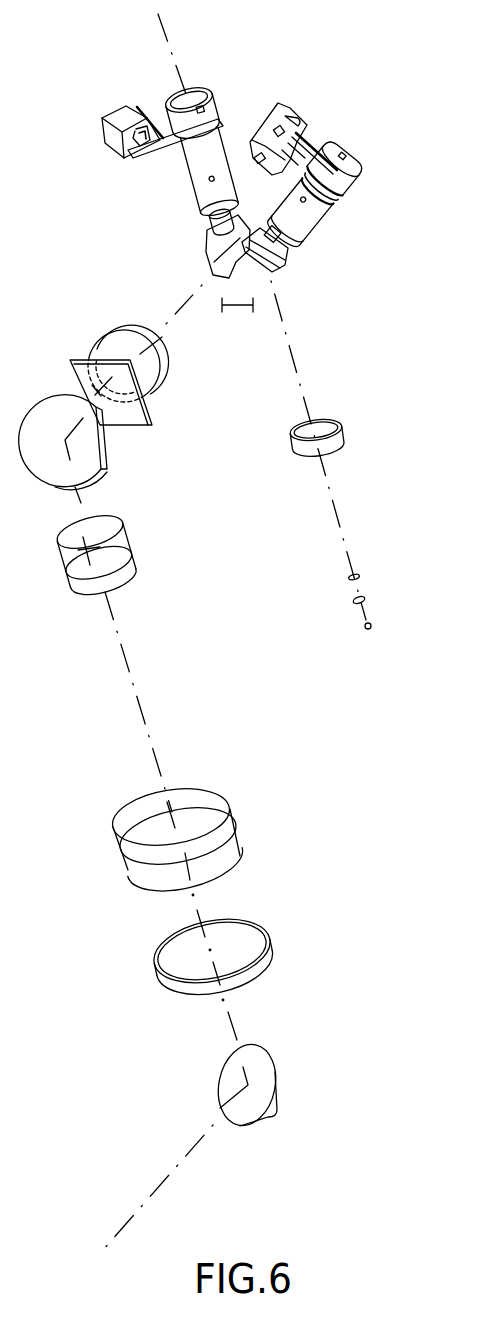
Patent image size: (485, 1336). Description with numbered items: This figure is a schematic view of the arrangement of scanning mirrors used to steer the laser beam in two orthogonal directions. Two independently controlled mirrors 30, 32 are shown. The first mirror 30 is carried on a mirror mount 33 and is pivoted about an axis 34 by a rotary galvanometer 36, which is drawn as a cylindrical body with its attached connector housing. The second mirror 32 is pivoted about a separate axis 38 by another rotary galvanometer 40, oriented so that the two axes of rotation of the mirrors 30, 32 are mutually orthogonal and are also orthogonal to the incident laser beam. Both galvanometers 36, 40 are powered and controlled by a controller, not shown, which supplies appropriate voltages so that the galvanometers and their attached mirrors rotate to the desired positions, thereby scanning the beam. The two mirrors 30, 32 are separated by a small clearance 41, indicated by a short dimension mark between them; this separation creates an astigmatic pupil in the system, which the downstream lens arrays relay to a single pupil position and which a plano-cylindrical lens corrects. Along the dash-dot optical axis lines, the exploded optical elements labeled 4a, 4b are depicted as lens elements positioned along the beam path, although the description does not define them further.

The mirror 30 is at (208, 260).
The mirror 32 is at (286, 262).
The mirror mount 33 is at (168, 90).
The axis 34 is at (166, 30).
The rotary galvanometer 36 is at (192, 176).
The axis 38 is at (342, 147).
The rotary galvanometer 40 is at (337, 199).
The clearance 41 is at (232, 306).
The lens element 4a is at (298, 374).
The lens element 4b is at (298, 374).